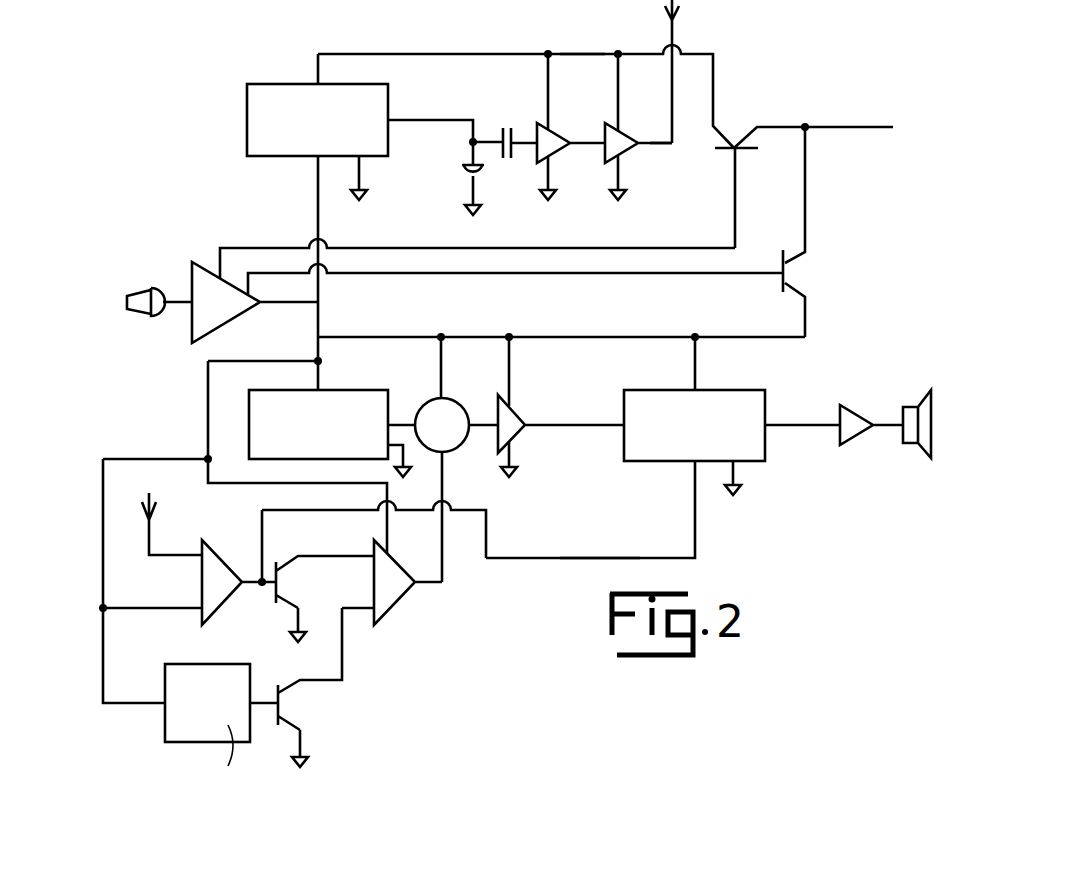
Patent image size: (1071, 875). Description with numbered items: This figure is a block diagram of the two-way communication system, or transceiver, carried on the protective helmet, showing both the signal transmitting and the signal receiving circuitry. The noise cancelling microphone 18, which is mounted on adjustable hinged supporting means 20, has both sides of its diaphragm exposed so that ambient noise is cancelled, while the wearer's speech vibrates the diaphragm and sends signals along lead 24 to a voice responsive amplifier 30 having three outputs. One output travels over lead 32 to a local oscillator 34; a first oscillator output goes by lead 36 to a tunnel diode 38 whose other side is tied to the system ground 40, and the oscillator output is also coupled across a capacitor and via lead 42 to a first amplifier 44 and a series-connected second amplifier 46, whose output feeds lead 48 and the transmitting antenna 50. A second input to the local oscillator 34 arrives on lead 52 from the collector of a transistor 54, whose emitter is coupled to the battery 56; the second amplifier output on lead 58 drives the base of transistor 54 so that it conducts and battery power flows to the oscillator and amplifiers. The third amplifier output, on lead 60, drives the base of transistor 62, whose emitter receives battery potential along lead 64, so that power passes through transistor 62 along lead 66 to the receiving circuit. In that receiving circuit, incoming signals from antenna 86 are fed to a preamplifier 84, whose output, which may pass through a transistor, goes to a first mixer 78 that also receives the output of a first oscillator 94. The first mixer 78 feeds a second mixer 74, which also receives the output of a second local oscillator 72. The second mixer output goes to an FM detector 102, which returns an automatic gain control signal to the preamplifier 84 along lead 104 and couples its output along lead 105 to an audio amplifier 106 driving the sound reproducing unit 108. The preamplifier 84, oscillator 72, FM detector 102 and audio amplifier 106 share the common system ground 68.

The microphone 18 is at (140, 292).
The adjustable hinged supporting means 20 is at (522, 0).
The electrical connections 24 is at (526, 74).
The voice responsive amplifier 30 is at (232, 312).
The lead 32 is at (316, 204).
The local oscillator 34 is at (273, 98).
The lead 36 is at (443, 114).
The tunnel diode 38 is at (462, 172).
The common ground 40 is at (362, 200).
The lead 42 is at (522, 133).
The first amplifier 44 is at (548, 140).
The second amplifier 46 is at (620, 140).
The lead 48 is at (672, 143).
The transmitting antenna 50 is at (678, 14).
The lead 52 is at (600, 54).
The transistor 54 is at (743, 137).
The battery 56 is at (921, 120).
The lead 58 is at (676, 248).
The lead 60 is at (720, 273).
The transistor 62 is at (800, 278).
The lead 64 is at (808, 193).
The lead 66 is at (603, 337).
The common system ground 68 is at (493, 498).
The second local oscillator 72 is at (354, 400).
The second mixer 74 is at (449, 414).
The first mixer 78 is at (409, 611).
The preamplifier 84 is at (212, 575).
The antenna 86 is at (156, 510).
The first oscillator 94 is at (188, 718).
The FM detector 102 is at (644, 461).
The lead 104 is at (559, 558).
The lead 105 is at (808, 425).
The audio amplifier 106 is at (845, 436).
The transducer or sound reproducing unit 108 is at (920, 410).